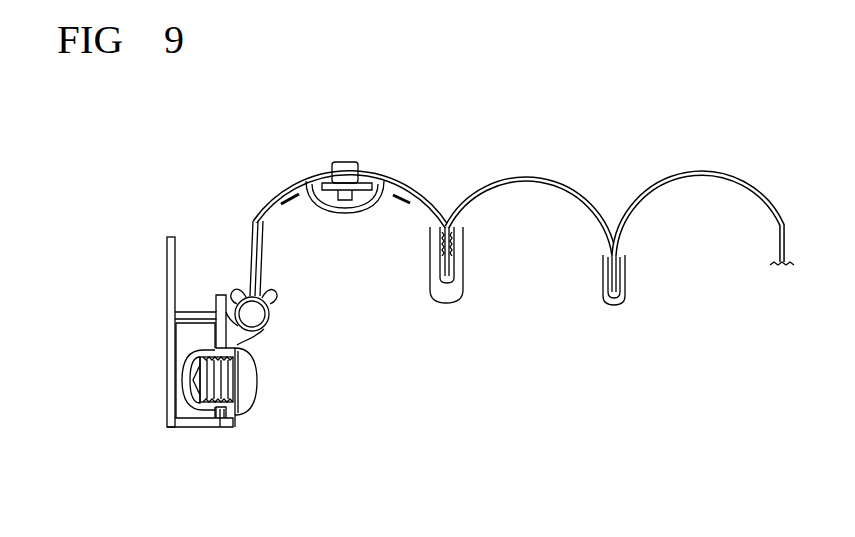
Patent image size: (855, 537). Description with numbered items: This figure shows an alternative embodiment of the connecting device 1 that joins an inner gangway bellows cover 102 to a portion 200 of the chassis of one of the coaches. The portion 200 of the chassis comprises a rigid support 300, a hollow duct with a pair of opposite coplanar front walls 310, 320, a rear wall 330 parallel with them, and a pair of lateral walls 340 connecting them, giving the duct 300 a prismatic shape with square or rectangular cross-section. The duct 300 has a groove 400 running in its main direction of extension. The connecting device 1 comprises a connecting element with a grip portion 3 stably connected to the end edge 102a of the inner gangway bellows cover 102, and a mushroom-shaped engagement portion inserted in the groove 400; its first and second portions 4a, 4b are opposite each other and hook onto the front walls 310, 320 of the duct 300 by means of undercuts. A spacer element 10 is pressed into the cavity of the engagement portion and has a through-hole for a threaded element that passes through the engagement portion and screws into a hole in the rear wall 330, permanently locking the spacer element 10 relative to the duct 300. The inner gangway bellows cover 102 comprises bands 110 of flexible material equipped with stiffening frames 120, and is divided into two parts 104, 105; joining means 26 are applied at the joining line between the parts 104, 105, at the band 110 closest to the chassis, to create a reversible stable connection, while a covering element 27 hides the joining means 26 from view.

The connecting device 1 is at (311, 339).
The grip portion 3 is at (261, 287).
The first portion 4a is at (183, 352).
The second portion 4b is at (186, 398).
The spacer element 10 is at (252, 405).
The joining means 26 is at (355, 162).
The covering element 27 is at (346, 213).
The inner gangway bellows cover 102 is at (524, 176).
The end edge 102a is at (303, 183).
The part 104 is at (389, 157).
The part 105 is at (426, 207).
The band 110 is at (524, 176).
The stiffening frame 120 is at (450, 295).
The portion of the chassis 200 is at (137, 279).
The rigid support 300 is at (184, 319).
The front wall 310 is at (221, 317).
The front wall 320 is at (221, 419).
The rear wall 330 is at (170, 337).
The lateral wall 340 is at (198, 312).
The groove 400 is at (164, 416).